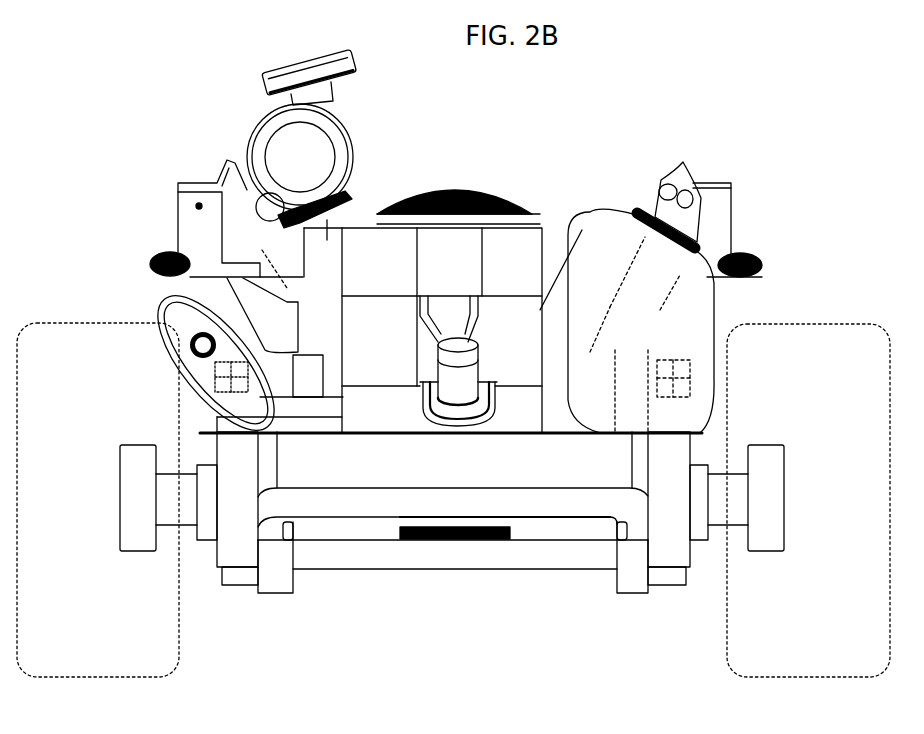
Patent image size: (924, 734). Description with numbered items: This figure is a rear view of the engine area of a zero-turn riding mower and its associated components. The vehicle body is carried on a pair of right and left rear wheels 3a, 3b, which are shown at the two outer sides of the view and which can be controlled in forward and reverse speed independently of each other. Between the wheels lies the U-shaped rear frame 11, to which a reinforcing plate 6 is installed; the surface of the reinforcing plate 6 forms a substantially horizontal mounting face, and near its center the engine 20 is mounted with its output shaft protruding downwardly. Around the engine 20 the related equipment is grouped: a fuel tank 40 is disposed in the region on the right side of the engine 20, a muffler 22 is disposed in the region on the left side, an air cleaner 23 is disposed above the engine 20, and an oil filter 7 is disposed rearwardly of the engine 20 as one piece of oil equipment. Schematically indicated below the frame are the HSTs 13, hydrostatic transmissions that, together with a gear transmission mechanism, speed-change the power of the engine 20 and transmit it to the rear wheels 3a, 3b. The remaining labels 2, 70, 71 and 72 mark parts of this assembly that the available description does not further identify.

The work machine body 2 is at (547, 165).
The left rear wheel 3a is at (100, 322).
The right rear wheel 3b is at (798, 322).
The reinforcing plate 6 is at (412, 437).
The oil filter 7 is at (457, 344).
The rear frame 11 is at (533, 500).
The HST 13 is at (232, 592).
The engine 20 is at (363, 240).
The muffler 22 is at (163, 348).
The air cleaner 23 is at (247, 140).
The fuel tank 40 is at (708, 323).
The starter motor 70 is at (425, 386).
The mount 71 is at (477, 433).
The holder 72 is at (502, 412).